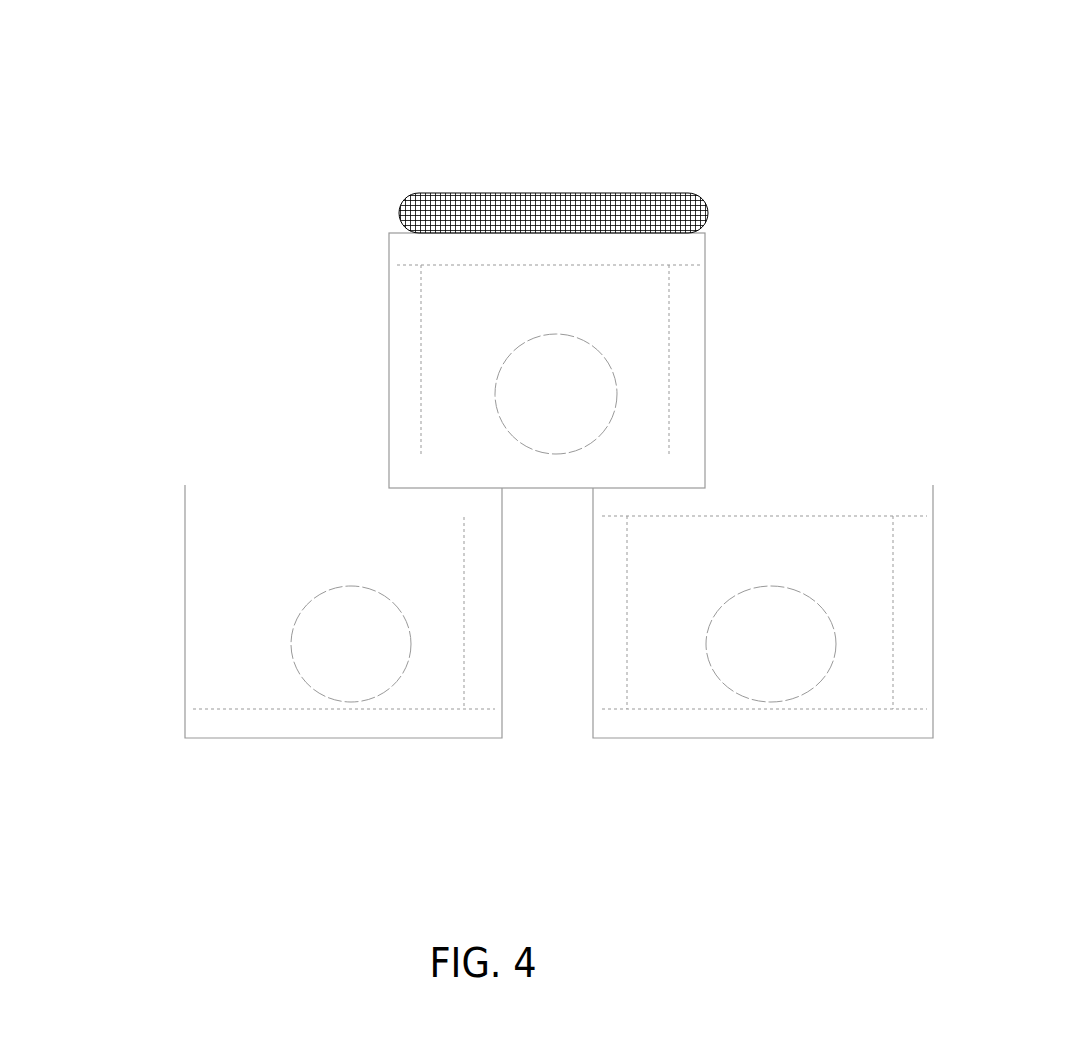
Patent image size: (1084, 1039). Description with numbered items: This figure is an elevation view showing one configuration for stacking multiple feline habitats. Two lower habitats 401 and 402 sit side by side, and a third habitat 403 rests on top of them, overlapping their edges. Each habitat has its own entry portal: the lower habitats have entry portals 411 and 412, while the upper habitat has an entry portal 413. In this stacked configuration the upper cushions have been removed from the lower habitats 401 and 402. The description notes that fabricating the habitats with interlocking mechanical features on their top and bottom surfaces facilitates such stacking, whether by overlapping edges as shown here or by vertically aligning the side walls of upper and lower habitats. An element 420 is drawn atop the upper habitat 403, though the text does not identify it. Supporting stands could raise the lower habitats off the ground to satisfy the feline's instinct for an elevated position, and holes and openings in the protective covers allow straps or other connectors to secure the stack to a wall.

The habitat 401 is at (166, 588).
The habitat 402 is at (763, 486).
The habitat 403 is at (706, 362).
The entry portal 411 is at (335, 672).
The entry portal 412 is at (769, 657).
The entry portal 413 is at (528, 392).
The hinge strip 420 is at (398, 215).